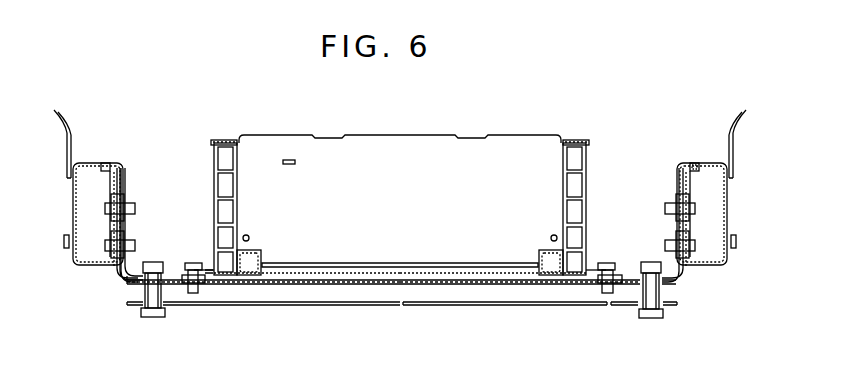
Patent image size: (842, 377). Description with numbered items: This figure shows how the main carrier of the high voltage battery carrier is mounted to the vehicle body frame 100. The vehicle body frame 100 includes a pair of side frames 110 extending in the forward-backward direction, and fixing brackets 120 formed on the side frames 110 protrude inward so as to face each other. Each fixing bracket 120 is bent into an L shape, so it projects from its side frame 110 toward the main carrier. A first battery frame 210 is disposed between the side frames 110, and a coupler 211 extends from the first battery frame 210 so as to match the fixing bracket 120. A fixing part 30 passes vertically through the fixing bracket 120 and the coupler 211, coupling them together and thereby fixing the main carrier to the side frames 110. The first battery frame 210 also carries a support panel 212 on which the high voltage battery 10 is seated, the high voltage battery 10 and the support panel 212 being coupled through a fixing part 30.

The high voltage battery 10 is at (571, 158).
The fixing part 30 is at (607, 263).
The vehicle body frame 100 is at (727, 266).
The side frame 110 is at (696, 162).
The fixing bracket 120 is at (684, 283).
The first battery frame 210 is at (443, 306).
The coupler 211 is at (625, 306).
The support panel 212 is at (212, 285).